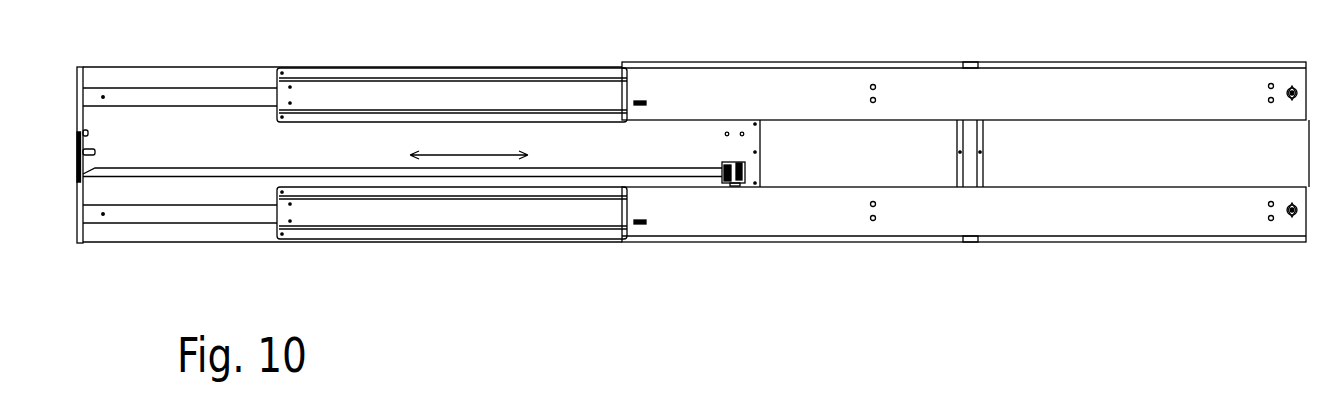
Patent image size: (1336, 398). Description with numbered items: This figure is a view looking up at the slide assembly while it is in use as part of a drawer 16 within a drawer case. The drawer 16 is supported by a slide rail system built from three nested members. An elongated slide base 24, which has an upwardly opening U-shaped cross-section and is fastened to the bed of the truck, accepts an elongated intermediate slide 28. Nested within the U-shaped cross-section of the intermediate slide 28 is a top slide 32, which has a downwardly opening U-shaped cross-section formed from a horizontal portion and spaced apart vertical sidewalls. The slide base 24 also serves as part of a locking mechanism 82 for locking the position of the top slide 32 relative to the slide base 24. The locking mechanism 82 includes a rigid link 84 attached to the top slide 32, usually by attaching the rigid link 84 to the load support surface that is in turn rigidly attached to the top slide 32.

The drawer 16 is at (183, 152).
The slide base 24 is at (1072, 103).
The intermediate slide 28 is at (277, 80).
The top slide 32 is at (182, 88).
The locking mechanism 82 is at (735, 192).
The rigid link 84 is at (145, 177).